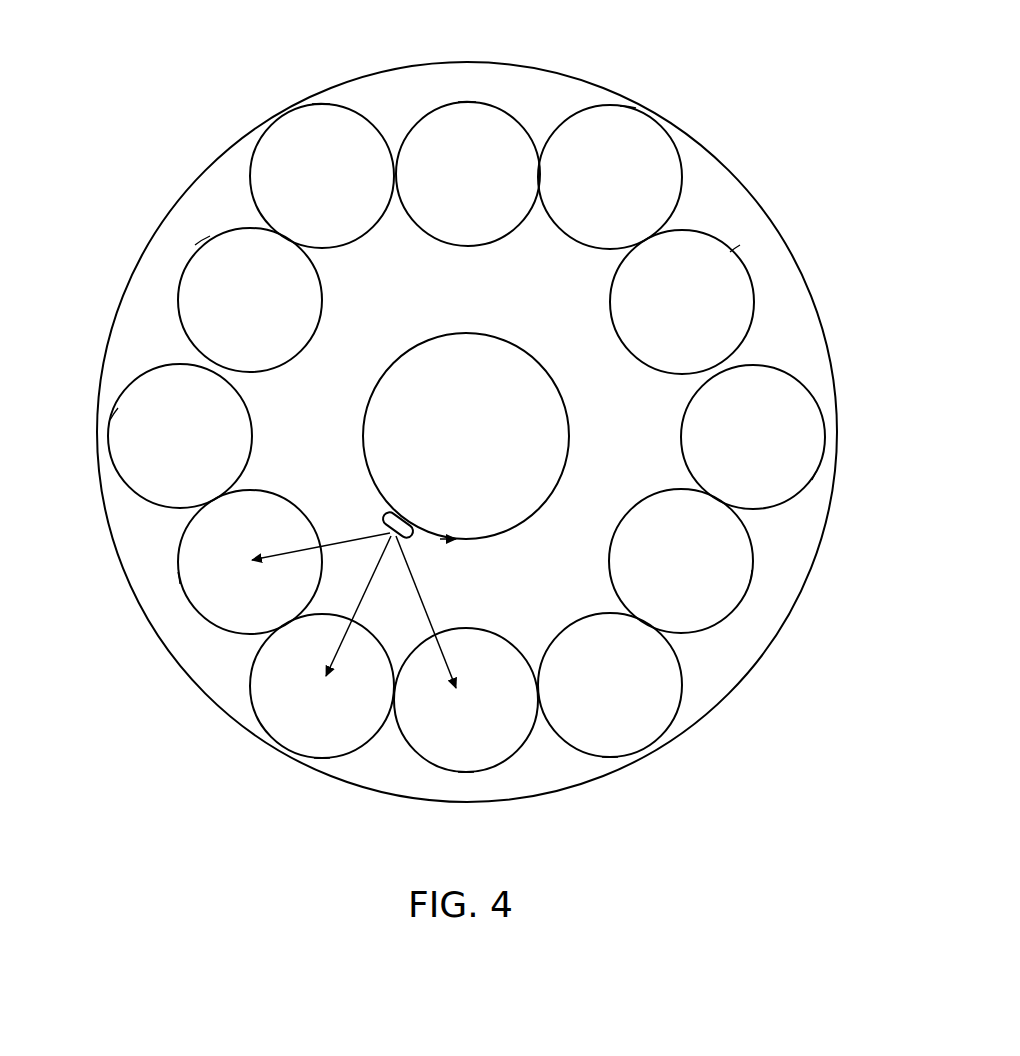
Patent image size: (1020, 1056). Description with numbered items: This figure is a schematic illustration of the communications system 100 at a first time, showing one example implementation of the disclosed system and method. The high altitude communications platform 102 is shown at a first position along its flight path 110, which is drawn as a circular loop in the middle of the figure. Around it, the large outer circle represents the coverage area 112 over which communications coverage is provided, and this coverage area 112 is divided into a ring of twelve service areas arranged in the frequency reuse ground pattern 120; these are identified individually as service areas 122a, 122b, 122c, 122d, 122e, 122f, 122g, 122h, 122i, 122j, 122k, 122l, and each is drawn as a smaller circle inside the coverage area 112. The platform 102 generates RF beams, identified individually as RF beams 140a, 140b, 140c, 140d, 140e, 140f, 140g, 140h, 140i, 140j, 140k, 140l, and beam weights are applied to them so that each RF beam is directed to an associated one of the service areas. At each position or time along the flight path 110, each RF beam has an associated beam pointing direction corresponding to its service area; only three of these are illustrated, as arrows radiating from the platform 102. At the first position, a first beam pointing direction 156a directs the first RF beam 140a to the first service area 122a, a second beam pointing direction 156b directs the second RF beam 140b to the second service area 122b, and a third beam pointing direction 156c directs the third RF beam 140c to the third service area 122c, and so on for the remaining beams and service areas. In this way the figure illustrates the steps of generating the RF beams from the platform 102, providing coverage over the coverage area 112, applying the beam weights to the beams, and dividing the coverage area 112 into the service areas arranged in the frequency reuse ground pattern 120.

The communications system 100 is at (778, 78).
The frequency reuse ground pattern 120 is at (792, 176).
The coverage area 112 is at (836, 366).
The flight path 110 is at (569, 434).
The high altitude communications platform 102 is at (408, 516).
The first beam pointing direction 156a is at (353, 535).
The second beam pointing direction 156b is at (377, 568).
The third beam pointing direction 156c is at (424, 596).
The first RF beam 140a is at (266, 587).
The second RF beam 140b is at (339, 711).
The third RF beam 140c is at (493, 718).
The RF beam 140d is at (637, 702).
The RF beam 140e is at (708, 574).
The RF beam 140f is at (779, 450).
The RF beam 140g is at (709, 315).
The RF beam 140h is at (637, 190).
The RF beam 140i is at (490, 187).
The RF beam 140j is at (347, 189).
The RF beam 140k is at (275, 313).
The RF beam 140l is at (194, 449).
The first service area 122a is at (180, 575).
The second service area 122b is at (322, 758).
The third service area 122c is at (466, 772).
The service area 122d is at (610, 757).
The service area 122e is at (754, 575).
The service area 122f is at (812, 478).
The service area 122g is at (740, 250).
The service area 122h is at (628, 105).
The service area 122i is at (468, 102).
The service area 122j is at (320, 104).
The service area 122k is at (200, 245).
The service area 122l is at (110, 416).